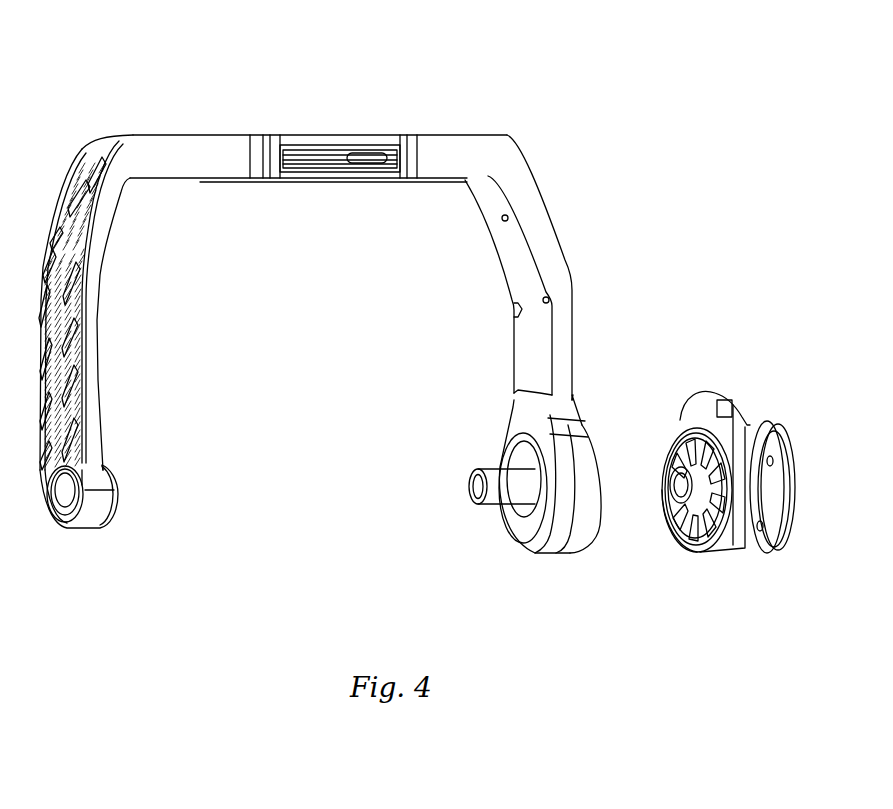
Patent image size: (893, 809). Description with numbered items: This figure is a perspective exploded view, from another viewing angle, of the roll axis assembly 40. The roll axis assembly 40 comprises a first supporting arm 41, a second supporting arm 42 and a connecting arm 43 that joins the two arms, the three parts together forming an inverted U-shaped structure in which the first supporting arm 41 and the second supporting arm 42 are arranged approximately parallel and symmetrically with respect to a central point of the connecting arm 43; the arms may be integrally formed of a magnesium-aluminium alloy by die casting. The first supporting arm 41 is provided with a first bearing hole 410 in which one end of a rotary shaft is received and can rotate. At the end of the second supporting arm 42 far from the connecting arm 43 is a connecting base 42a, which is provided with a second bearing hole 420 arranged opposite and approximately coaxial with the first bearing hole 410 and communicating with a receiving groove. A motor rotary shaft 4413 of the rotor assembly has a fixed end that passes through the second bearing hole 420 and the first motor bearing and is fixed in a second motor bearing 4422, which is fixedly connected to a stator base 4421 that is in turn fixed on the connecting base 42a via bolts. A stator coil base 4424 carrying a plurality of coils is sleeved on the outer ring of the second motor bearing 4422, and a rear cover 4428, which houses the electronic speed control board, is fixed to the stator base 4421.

The roll axis assembly 40 is at (348, 31).
The first supporting arm 41 is at (87, 270).
The first bearing hole 410 is at (60, 497).
The second supporting arm 42 is at (540, 232).
The connecting base 42a is at (558, 402).
The second bearing hole 420 is at (517, 467).
The connecting arm 43 is at (200, 143).
The motor rotary shaft 4413 is at (490, 497).
The stator base 4421 is at (730, 533).
The second motor bearing 4422 is at (671, 447).
The stator coil base 4424 is at (693, 550).
The rear cover 4428 is at (787, 540).